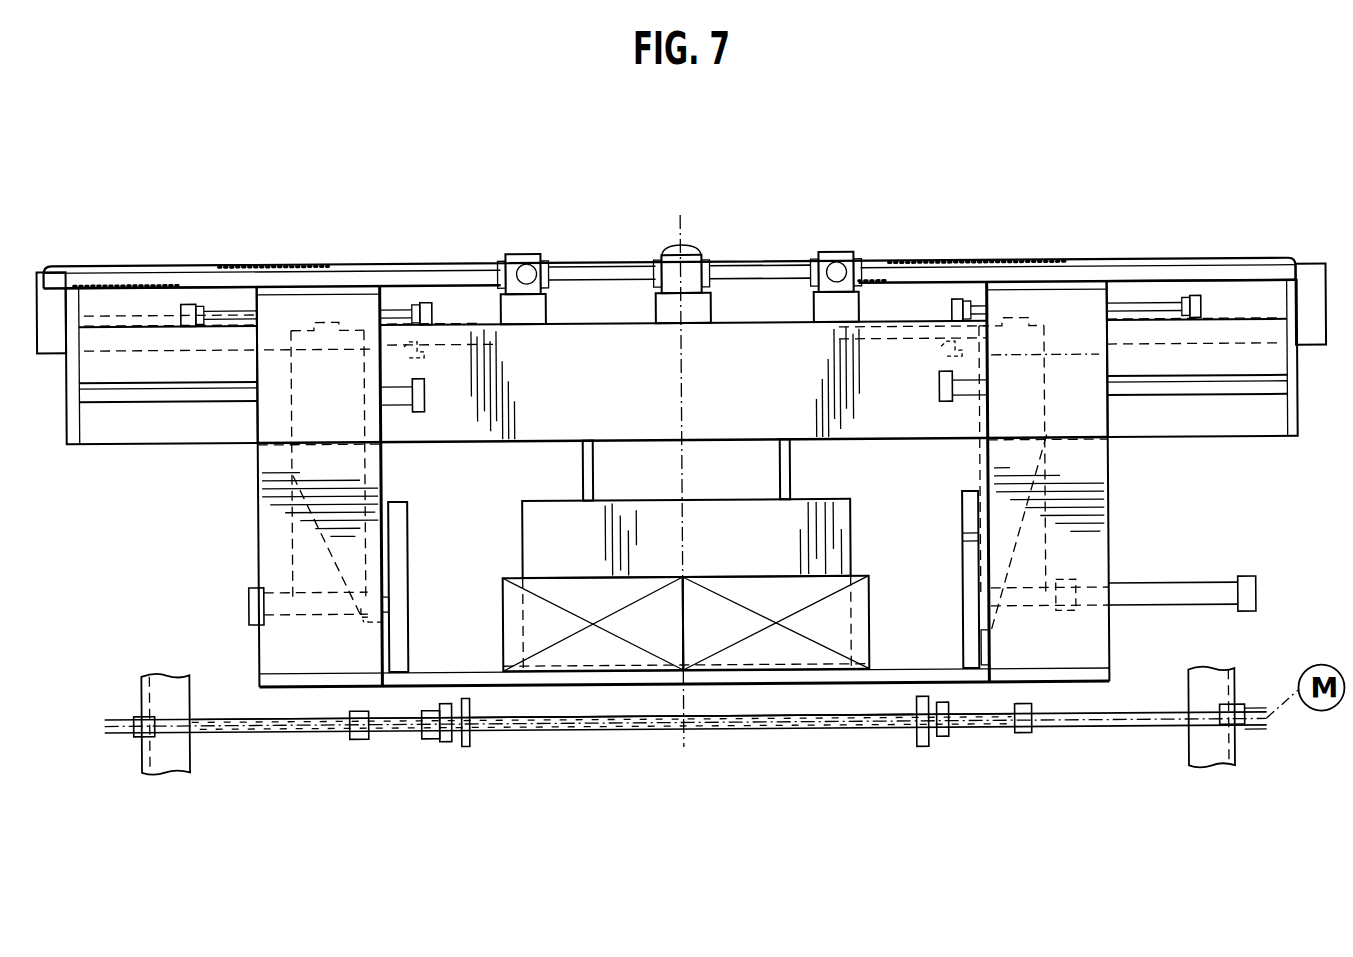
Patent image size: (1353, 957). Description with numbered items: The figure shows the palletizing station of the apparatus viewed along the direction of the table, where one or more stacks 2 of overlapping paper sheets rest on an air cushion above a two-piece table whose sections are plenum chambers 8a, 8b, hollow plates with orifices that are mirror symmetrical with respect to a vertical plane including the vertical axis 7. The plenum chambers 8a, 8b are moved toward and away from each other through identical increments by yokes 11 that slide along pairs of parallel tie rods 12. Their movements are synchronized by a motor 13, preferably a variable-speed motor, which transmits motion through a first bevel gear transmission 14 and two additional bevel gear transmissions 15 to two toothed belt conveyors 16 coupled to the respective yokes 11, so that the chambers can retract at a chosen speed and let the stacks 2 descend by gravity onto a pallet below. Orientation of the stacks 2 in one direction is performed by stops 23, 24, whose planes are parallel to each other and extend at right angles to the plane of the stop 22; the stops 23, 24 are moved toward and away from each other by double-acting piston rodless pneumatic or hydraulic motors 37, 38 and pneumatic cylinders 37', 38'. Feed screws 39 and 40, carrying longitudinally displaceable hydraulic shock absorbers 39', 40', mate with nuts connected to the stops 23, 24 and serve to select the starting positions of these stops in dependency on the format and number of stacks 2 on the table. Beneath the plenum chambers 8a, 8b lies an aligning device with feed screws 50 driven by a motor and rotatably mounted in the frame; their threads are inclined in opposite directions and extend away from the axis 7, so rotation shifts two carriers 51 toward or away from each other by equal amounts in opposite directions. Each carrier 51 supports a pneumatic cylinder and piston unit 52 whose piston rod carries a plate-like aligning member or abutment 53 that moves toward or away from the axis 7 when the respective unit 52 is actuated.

The stack 2 is at (502, 622).
The vertical axis 7 is at (697, 727).
The plenum chamber 8a is at (493, 678).
The plenum chamber 8b is at (825, 675).
The yoke 11 is at (331, 417).
The tie rod 12 is at (144, 393).
The motor 13 is at (690, 248).
The first bevel gear transmission 14 is at (700, 262).
The additional bevel gear transmission 15 is at (529, 257).
The toothed belt conveyor 16 is at (399, 262).
The stop 22 is at (760, 545).
The stop 23 is at (970, 670).
The stop 24 is at (400, 667).
The double-acting piston rodless motor 37 is at (1153, 261).
The pneumatic cylinder 37' is at (1124, 621).
The double-acting piston rodless motor 38 is at (337, 273).
The pneumatic cylinder 38' is at (281, 623).
The feed screw 39 is at (1100, 266).
The hydraulic shock absorber 39' is at (935, 371).
The feed screw 40 is at (218, 281).
The hydraulic shock absorber 40' is at (423, 377).
The feed screw 50 is at (627, 727).
The carrier 51 is at (445, 740).
The pneumatic cylinder and piston unit 52 is at (412, 735).
The aligning member 53 is at (463, 747).